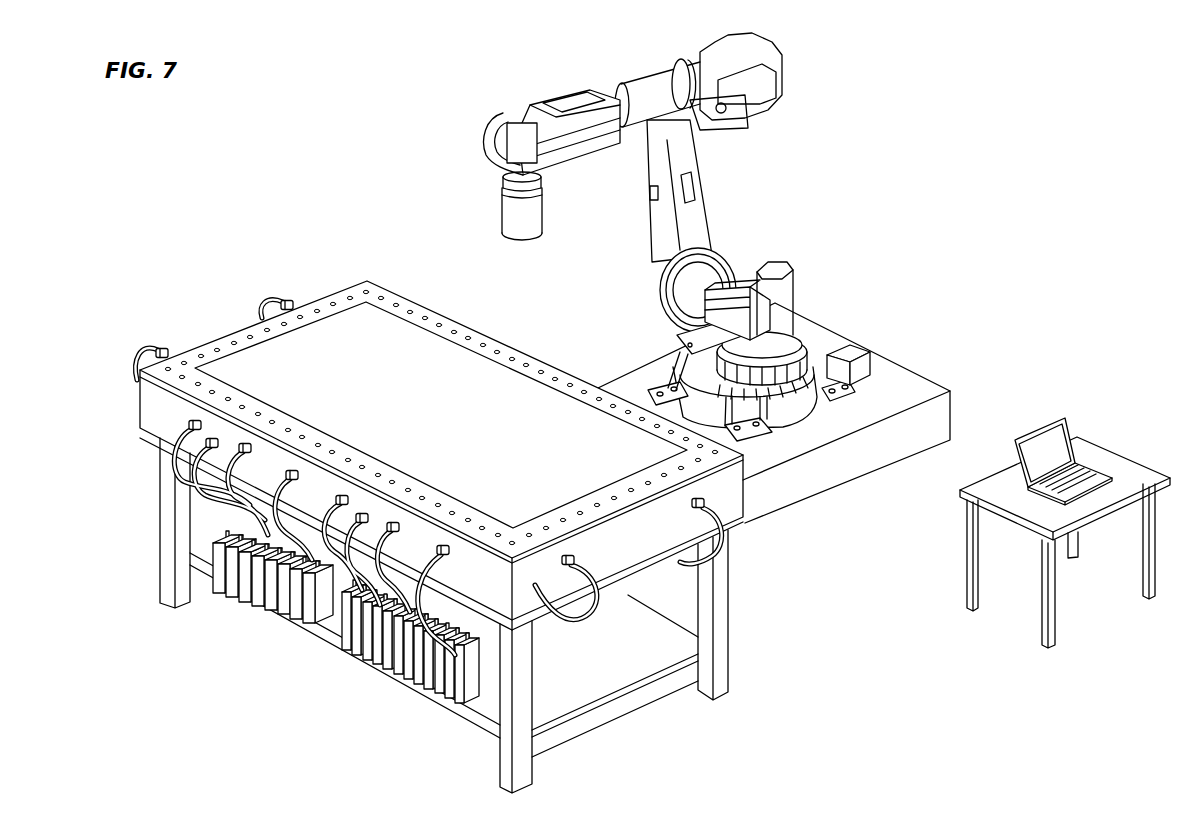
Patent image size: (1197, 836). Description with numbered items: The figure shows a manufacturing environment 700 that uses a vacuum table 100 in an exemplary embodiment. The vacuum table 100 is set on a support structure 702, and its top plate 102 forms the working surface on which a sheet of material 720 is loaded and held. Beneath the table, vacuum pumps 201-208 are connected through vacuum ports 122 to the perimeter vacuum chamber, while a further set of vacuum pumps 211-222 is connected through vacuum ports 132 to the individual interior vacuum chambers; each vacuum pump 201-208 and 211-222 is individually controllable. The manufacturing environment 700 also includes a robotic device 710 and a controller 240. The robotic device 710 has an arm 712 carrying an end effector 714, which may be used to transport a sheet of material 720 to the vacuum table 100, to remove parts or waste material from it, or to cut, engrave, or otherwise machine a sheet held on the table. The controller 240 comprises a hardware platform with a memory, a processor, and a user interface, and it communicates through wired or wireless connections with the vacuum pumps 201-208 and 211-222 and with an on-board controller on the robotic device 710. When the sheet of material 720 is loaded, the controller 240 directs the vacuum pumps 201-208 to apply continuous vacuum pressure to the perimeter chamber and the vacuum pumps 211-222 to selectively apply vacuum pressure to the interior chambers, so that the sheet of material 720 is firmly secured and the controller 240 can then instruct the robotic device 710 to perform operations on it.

The manufacturing environment 700 is at (1058, 107).
The robotic device 710 is at (836, 232).
The arm 712 is at (608, 90).
The end effector 714 is at (527, 216).
The vacuum table 100 is at (128, 426).
The top plate 102 is at (410, 308).
The sheet of material 720 is at (258, 362).
The vacuum ports 122 is at (193, 424).
The vacuum ports 132 is at (450, 557).
The vacuum pumps 201-208 is at (295, 644).
The vacuum pumps 211-222 is at (443, 720).
The support structure 702 is at (505, 748).
The controller 240 is at (1103, 462).